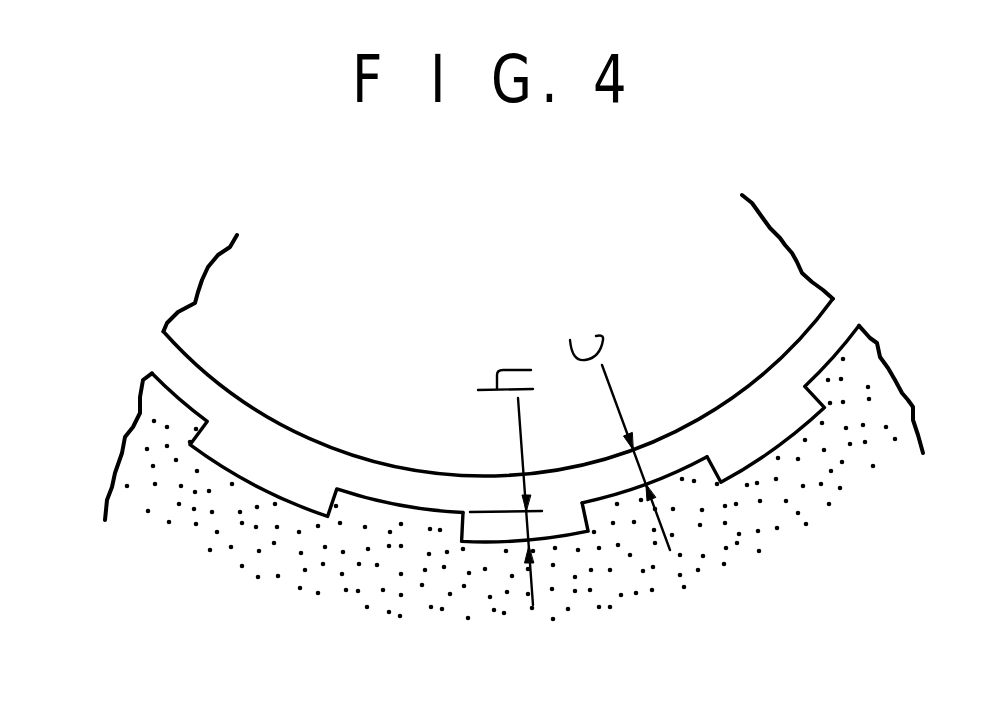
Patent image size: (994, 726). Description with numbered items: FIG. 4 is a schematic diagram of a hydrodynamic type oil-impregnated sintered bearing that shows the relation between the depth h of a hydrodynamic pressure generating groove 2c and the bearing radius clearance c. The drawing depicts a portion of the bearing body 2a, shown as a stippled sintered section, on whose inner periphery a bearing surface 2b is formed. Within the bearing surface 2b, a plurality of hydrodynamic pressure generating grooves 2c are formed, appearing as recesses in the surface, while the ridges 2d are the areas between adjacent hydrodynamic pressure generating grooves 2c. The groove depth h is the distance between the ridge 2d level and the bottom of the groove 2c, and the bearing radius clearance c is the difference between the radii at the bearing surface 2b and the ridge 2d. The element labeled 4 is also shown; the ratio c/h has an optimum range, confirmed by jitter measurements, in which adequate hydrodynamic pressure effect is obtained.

The ring member 4 is at (448, 355).
The bearing body 2a is at (133, 480).
The bearing surface 2b is at (267, 464).
The hydrodynamic pressure generating groove 2c is at (513, 543).
The ridge 2d is at (630, 492).